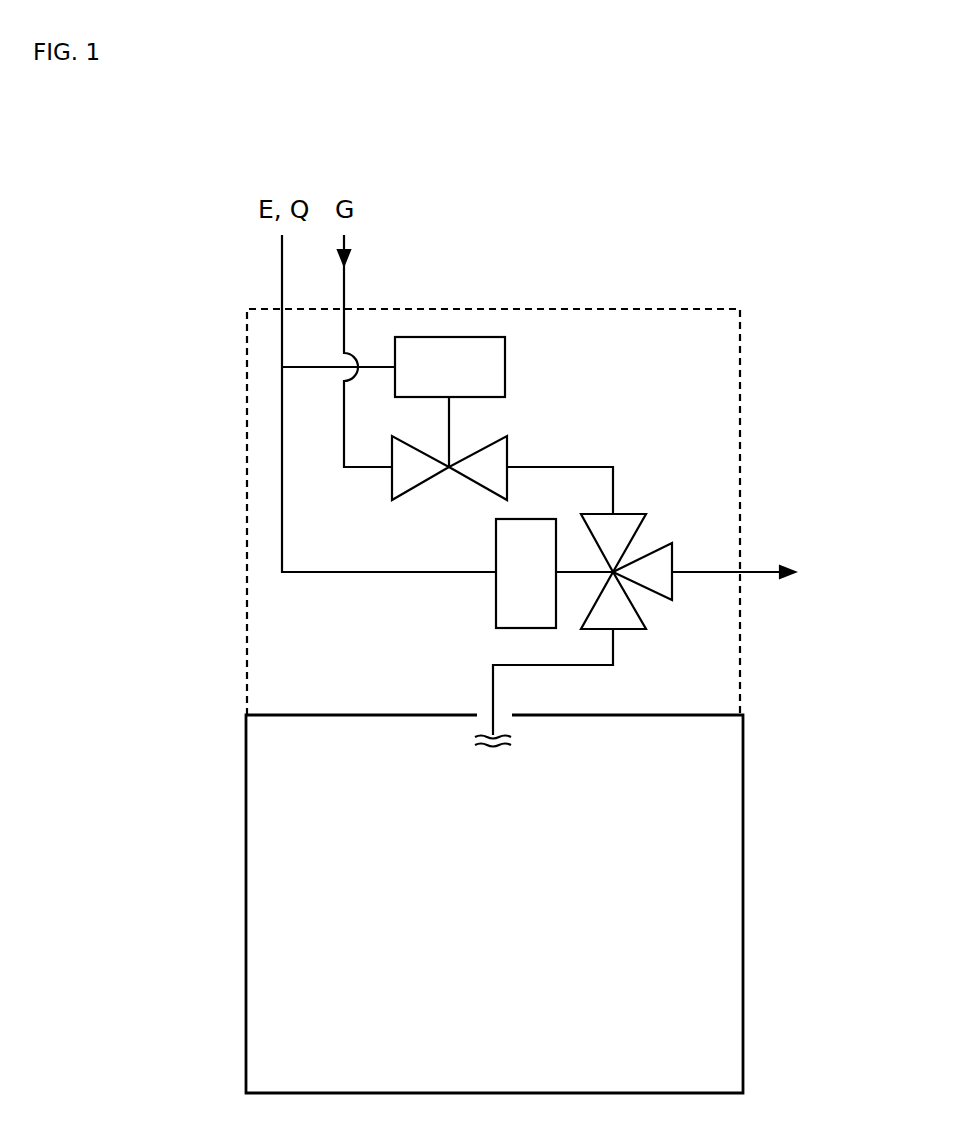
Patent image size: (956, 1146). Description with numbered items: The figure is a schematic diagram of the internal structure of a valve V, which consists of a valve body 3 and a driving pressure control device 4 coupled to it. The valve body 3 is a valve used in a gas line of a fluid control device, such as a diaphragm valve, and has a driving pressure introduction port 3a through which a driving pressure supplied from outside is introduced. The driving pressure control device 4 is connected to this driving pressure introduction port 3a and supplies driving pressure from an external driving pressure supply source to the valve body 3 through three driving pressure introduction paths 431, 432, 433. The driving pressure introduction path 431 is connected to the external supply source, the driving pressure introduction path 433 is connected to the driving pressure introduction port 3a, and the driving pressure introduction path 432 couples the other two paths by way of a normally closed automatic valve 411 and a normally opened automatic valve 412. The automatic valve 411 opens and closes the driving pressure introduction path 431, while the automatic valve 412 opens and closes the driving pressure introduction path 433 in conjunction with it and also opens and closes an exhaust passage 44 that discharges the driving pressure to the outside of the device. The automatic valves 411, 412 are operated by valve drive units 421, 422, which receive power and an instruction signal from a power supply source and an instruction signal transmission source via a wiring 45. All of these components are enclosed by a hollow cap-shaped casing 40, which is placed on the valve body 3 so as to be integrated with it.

The valve V is at (214, 221).
The valve body 3 is at (743, 785).
The driving pressure introduction port 3a is at (483, 712).
The driving pressure control device 4 is at (247, 433).
The casing 40 is at (688, 309).
The exhaust passage 44 is at (757, 572).
The wiring 45 is at (282, 290).
The automatic valve 411 is at (507, 436).
The automatic valve 412 is at (640, 514).
The valve drive unit 421 is at (478, 337).
The valve drive unit 422 is at (495, 587).
The driving pressure introduction path 431 is at (345, 292).
The driving pressure introduction path 432 is at (570, 467).
The driving pressure introduction path 433 is at (613, 653).